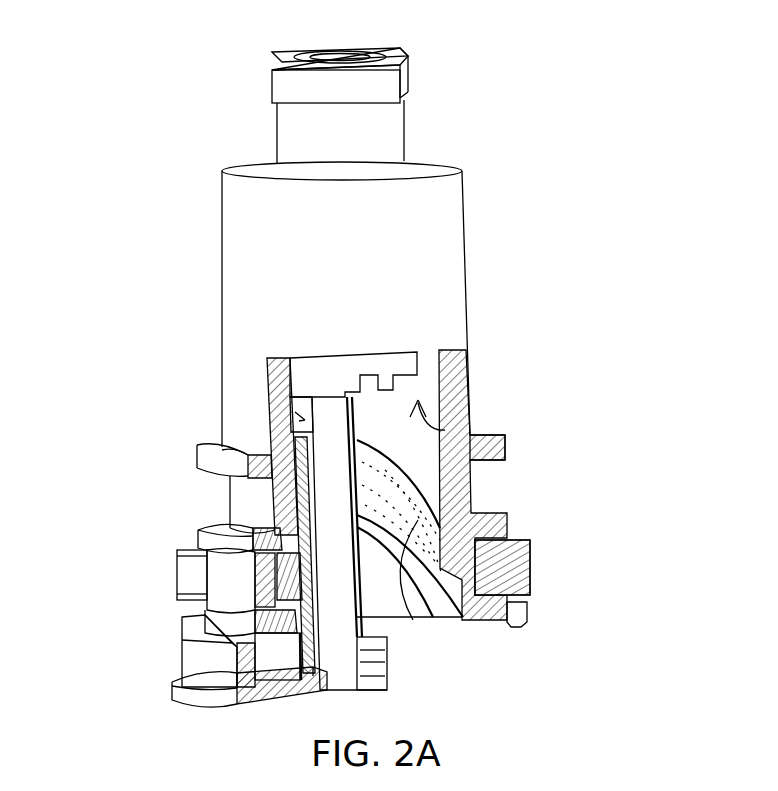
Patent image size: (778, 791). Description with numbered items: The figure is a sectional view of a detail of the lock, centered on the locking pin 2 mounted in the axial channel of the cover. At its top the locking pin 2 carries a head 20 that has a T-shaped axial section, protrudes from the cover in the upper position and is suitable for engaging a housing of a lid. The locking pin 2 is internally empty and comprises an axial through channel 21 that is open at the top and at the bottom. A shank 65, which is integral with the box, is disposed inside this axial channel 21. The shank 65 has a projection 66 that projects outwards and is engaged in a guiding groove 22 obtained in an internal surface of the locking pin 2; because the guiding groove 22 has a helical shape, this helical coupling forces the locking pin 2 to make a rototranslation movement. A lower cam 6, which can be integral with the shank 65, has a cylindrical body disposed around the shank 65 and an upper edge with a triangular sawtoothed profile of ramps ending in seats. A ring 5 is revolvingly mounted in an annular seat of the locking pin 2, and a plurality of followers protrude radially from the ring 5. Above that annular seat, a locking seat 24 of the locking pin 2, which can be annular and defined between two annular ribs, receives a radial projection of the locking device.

The head 20 is at (414, 60).
The locking pin 2 is at (448, 222).
The axial through channel 21 is at (441, 430).
The locking seat 24 is at (485, 480).
The ring 5 is at (533, 560).
The guiding groove 22 is at (413, 620).
The projection 66 is at (300, 418).
The shank 65 is at (245, 508).
The lower cam 6 is at (215, 665).